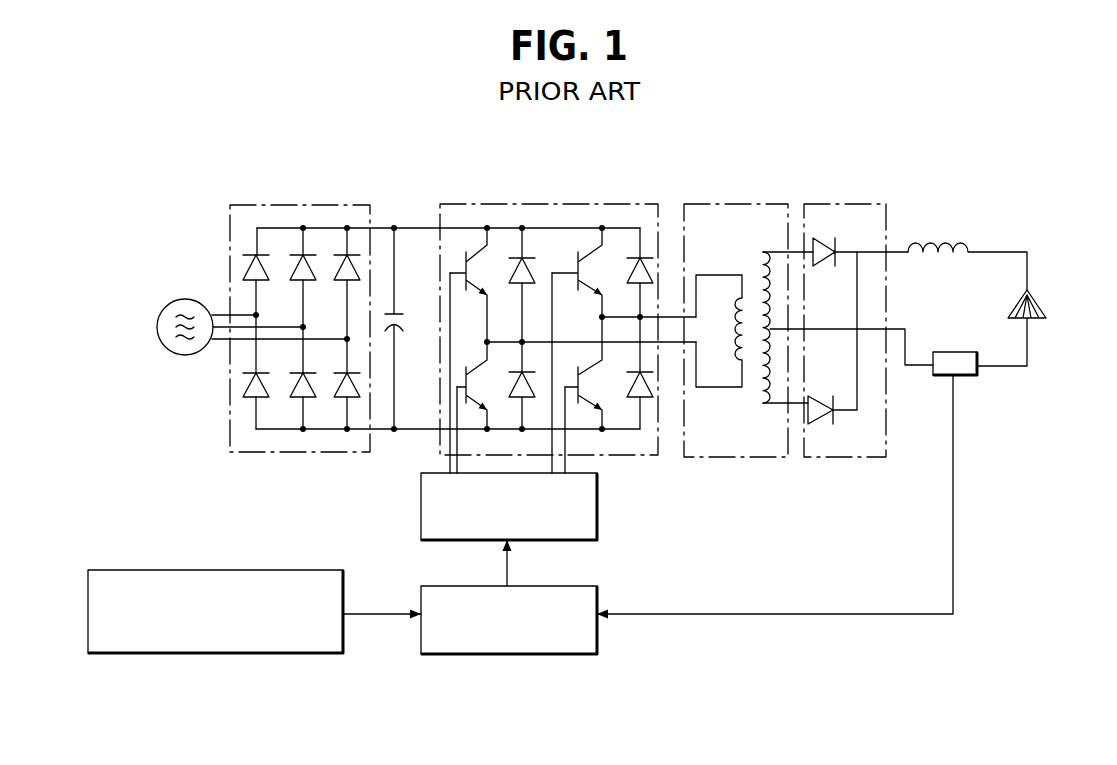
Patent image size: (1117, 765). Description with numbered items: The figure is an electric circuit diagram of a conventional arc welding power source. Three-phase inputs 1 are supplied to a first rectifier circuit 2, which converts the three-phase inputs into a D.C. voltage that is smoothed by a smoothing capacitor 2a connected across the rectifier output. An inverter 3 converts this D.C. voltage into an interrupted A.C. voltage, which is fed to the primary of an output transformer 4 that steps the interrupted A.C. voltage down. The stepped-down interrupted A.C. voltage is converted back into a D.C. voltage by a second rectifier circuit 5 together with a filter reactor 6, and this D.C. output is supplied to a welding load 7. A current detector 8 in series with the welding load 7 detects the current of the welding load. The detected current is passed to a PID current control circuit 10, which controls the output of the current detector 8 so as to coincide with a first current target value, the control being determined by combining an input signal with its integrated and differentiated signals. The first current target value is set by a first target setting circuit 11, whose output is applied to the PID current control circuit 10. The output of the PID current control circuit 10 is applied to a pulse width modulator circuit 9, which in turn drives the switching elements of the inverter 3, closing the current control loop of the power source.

The 3-phase inputs 1 is at (185, 299).
The first rectifier circuit 2 is at (310, 205).
The smoothing capacitor 2a is at (398, 314).
The inverter 3 is at (559, 205).
The output transformer 4 is at (737, 205).
The second rectifier circuit 5 is at (848, 205).
The filter reactor 6 is at (932, 242).
The welding load 7 is at (1045, 302).
The current detector 8 is at (964, 376).
The pulse width modulator (PWM) circuit 9 is at (598, 500).
The PID current control circuit 10 is at (508, 654).
The first target setting circuit 11 is at (203, 654).